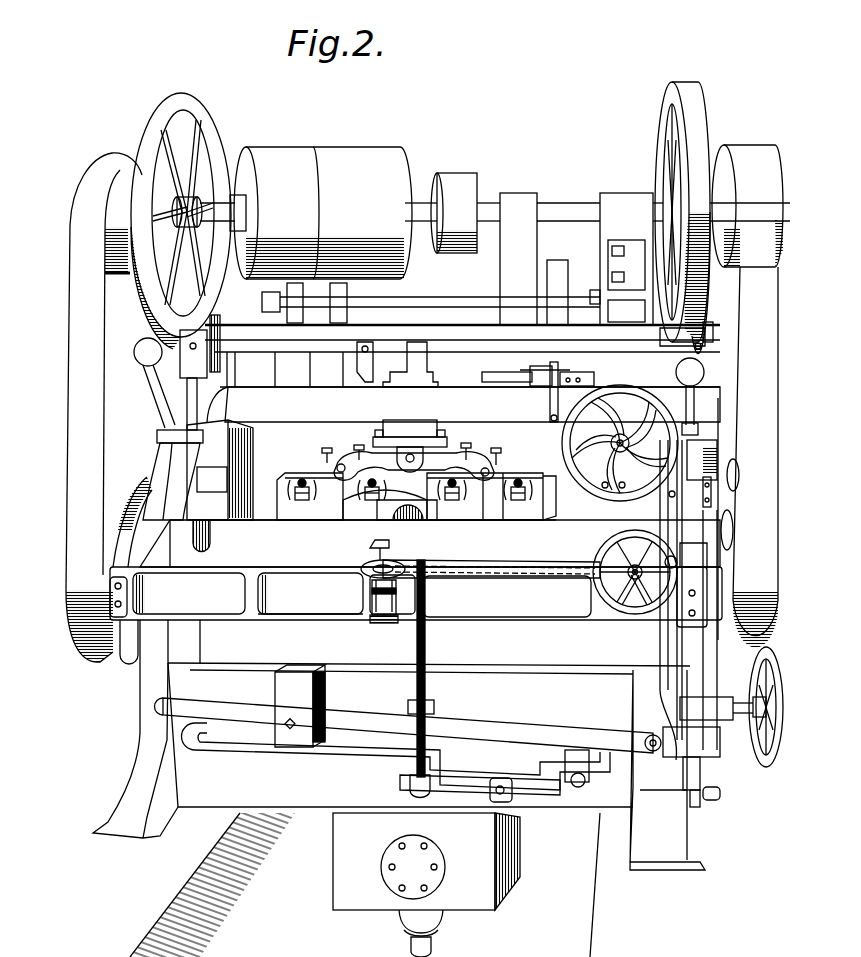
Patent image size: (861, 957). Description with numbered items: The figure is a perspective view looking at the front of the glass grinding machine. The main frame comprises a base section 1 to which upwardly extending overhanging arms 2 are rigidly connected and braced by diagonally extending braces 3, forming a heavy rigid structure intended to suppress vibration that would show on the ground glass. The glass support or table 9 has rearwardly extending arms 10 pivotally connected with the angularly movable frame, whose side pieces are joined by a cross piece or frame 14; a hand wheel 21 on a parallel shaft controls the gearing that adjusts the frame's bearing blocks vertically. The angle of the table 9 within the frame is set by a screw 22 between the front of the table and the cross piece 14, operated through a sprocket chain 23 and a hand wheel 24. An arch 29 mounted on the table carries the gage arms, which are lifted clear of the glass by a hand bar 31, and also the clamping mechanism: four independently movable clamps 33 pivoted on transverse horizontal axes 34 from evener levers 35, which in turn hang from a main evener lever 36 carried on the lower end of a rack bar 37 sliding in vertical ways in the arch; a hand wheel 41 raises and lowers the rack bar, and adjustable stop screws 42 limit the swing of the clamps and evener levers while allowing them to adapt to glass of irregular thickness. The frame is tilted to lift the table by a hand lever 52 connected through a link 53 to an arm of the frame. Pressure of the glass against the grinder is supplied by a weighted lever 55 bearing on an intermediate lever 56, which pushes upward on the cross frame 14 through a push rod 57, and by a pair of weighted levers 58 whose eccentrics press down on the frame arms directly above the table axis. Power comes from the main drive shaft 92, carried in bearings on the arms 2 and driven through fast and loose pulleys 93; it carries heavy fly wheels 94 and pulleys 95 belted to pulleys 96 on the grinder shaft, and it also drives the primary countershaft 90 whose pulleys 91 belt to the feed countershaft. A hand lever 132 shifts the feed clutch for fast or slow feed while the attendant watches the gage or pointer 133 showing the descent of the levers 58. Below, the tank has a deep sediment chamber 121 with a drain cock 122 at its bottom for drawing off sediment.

The base section 1 is at (146, 738).
The upwardly extending overhanging arms 2 is at (608, 370).
The diagonally extending braces 3 is at (628, 378).
The glass support or table 9 is at (218, 540).
The rearwardly extending arms 10 is at (248, 464).
The cross piece or frame 14 is at (332, 607).
The hand wheel 21 is at (779, 700).
The screw 22 is at (390, 614).
The sprocket chain 23 is at (380, 565).
The hand wheel 24 is at (617, 602).
The arch 29 is at (463, 404).
The hand bar 31 is at (556, 398).
The independently movable clamps 33 is at (282, 508).
The transverse horizontal axes 34 is at (395, 514).
The evener levers 35 is at (326, 476).
The main evener lever 36 is at (447, 452).
The rack bar 37 is at (410, 446).
The hand wheel 41 is at (660, 408).
The adjustable stop screws 42 is at (498, 458).
The hand lever 52 is at (720, 633).
The link 53 is at (694, 810).
The weighted lever 55 is at (350, 720).
The intermediate lever 56 is at (544, 782).
The push rod 57 is at (426, 660).
The weighted levers 58 is at (162, 408).
The primary countershaft 90 is at (443, 300).
The pulleys 91 is at (558, 274).
The main drive shaft 92 is at (556, 205).
The fast and loose pulleys 93 is at (321, 213).
The fly wheels 94 is at (141, 130).
The pulleys 95 is at (68, 204).
The pulleys 96 is at (101, 506).
The sediment chamber 121 is at (338, 868).
The drain cock 122 is at (428, 922).
The hand lever 132 is at (660, 679).
The gage or pointer 133 is at (712, 332).